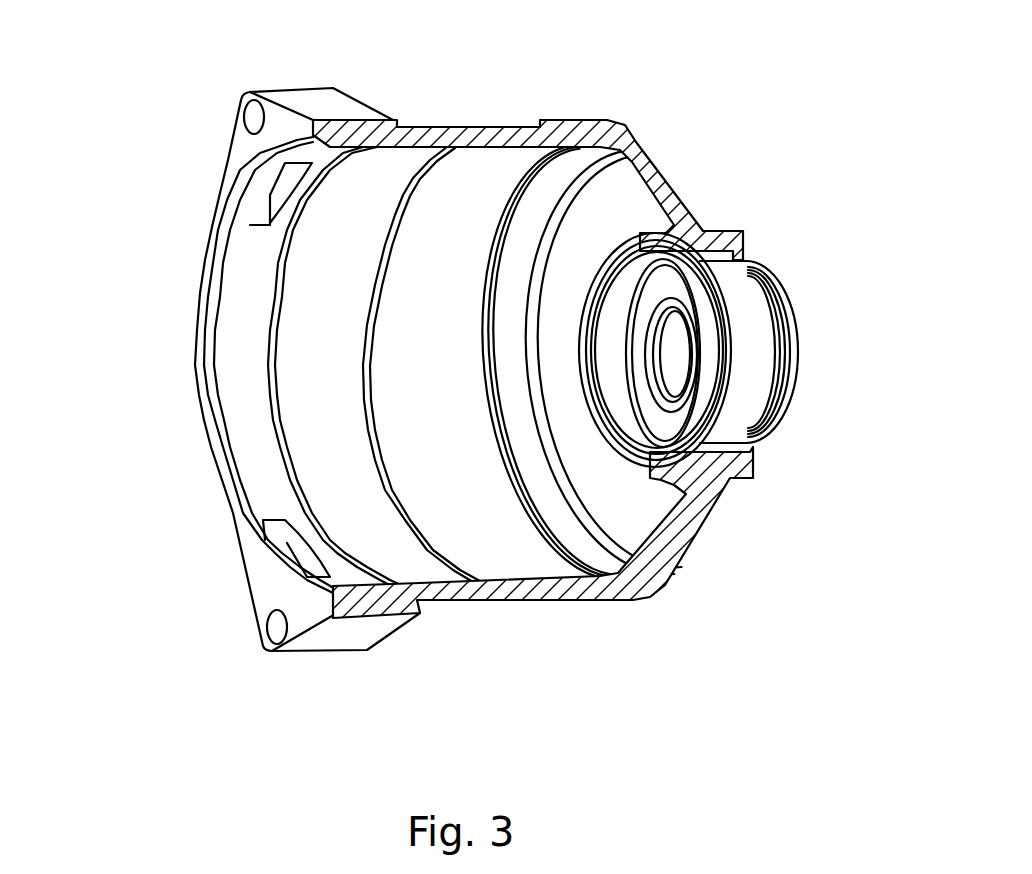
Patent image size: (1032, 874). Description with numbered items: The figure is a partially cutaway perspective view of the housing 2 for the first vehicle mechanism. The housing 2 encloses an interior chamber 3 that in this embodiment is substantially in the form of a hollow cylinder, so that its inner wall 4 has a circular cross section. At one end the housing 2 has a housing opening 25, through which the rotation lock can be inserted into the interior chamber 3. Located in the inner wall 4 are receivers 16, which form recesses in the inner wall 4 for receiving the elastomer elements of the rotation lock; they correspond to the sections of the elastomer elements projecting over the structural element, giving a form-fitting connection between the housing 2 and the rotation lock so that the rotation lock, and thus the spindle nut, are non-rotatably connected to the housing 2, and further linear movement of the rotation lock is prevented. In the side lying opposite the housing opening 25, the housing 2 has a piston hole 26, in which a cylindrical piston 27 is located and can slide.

The housing 2 is at (634, 131).
The interior chamber 3 is at (633, 199).
The inner wall 4 is at (508, 154).
The receivers 16 is at (267, 195).
The housing opening 25 is at (160, 378).
The piston hole 26 is at (770, 240).
The piston 27 is at (798, 350).